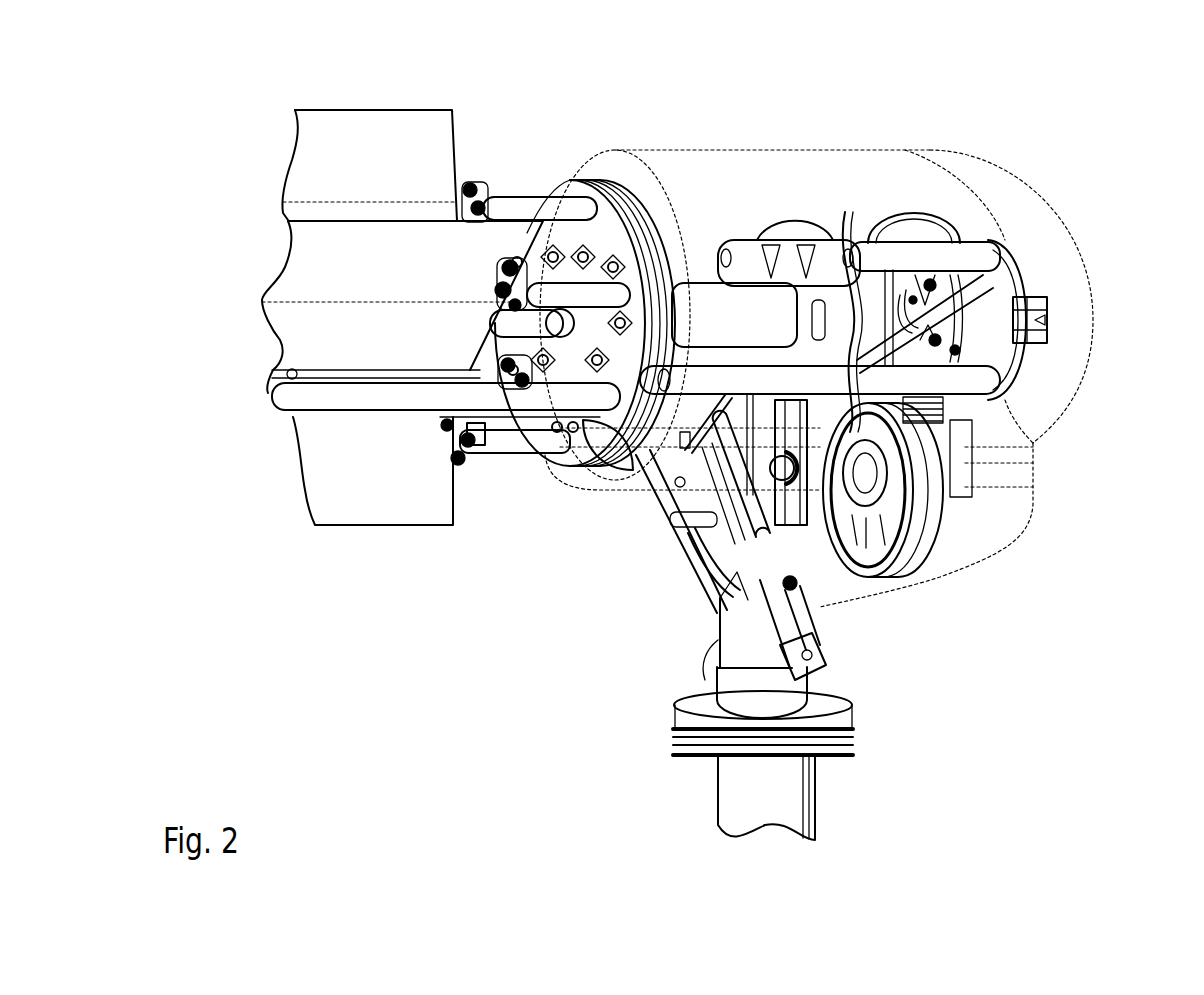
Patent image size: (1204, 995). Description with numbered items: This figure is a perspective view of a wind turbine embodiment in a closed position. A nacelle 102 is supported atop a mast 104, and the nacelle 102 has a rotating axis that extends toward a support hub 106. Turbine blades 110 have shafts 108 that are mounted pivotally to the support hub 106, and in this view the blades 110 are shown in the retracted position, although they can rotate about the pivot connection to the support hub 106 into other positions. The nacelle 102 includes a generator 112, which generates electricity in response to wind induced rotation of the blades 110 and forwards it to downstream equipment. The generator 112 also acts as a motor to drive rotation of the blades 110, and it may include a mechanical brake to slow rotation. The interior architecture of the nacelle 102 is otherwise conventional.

The nacelle 102 is at (722, 195).
The mast 104 is at (855, 805).
The support hub 106 is at (540, 162).
The shafts 108 is at (483, 463).
The turbine blades 110 is at (285, 545).
The generator 112 is at (1012, 224).